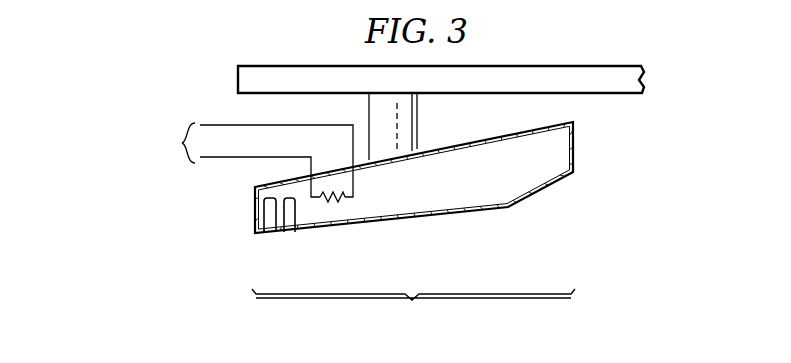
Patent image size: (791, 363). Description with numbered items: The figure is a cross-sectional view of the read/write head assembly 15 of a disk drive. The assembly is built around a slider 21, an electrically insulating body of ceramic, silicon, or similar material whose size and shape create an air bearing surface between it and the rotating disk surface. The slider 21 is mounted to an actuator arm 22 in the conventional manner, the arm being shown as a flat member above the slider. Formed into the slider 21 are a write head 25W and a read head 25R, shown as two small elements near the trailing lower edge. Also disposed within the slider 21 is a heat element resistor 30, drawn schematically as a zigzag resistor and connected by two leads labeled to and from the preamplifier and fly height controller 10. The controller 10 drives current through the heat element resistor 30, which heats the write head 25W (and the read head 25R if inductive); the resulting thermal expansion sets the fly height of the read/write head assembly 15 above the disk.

The actuator arm 22 is at (555, 65).
The slider 21 is at (455, 216).
The write head 25W is at (270, 233).
The read head 25R is at (287, 233).
The heat element resistor 30 is at (332, 214).
The read/write head assembly 15 is at (413, 311).
The preamplifier and fly height controller 10 is at (207, 160).